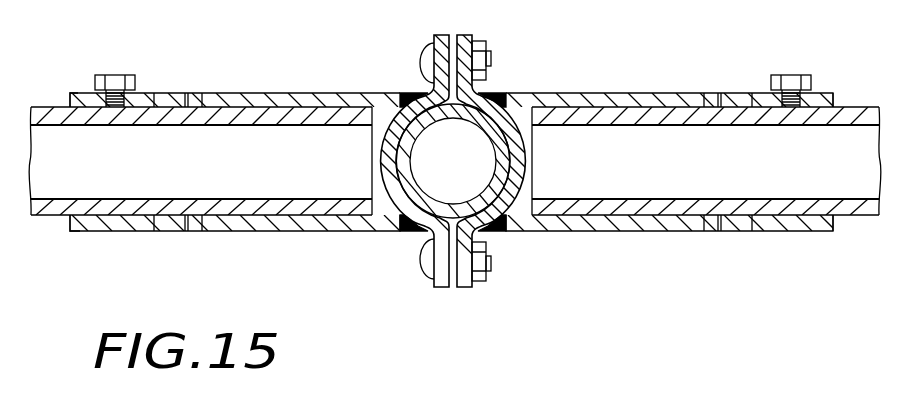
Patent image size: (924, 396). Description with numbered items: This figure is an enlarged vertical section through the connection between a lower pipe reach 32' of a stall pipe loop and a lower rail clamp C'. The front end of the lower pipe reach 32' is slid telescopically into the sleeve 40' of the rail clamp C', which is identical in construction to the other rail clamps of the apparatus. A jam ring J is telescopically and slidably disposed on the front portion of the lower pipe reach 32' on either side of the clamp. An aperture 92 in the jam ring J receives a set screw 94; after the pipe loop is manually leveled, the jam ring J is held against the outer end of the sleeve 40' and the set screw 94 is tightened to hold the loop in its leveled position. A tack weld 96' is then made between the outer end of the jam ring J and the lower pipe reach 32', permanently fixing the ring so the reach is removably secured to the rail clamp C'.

The lower pipe reach 32' is at (450, 161).
The sleeve 40' is at (453, 134).
The set screw 94 is at (118, 75).
The aperture 92 is at (790, 75).
The tack weld 96' is at (456, 77).
The rail clamp C' is at (456, 171).
The jam ring J is at (117, 232).